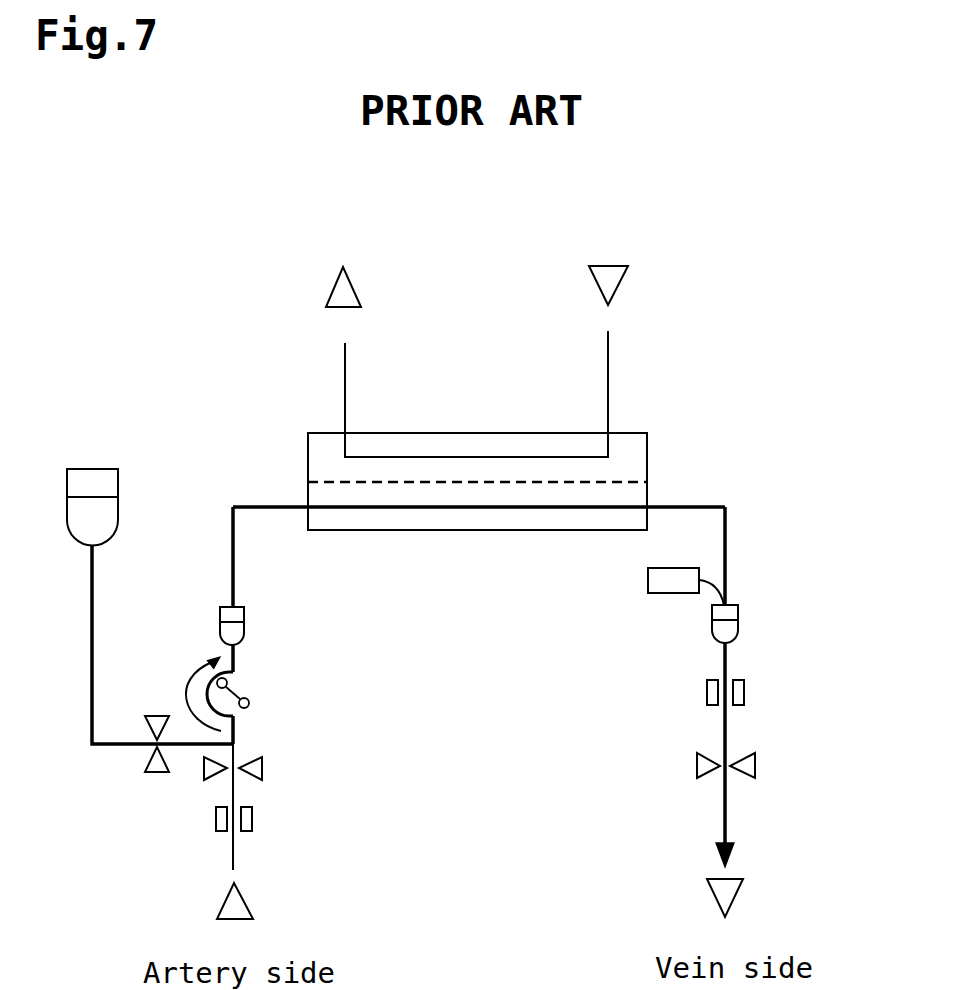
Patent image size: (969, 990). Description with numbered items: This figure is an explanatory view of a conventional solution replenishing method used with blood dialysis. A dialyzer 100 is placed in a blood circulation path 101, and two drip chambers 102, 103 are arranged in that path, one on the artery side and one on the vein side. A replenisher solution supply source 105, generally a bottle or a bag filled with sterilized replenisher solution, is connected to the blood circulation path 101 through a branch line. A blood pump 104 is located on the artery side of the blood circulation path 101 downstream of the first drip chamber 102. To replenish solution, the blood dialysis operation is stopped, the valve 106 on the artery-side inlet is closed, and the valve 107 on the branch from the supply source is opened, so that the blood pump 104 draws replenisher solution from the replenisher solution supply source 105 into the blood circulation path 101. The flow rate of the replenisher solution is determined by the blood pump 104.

The dialyzer 100 is at (549, 398).
The blood circulation path 101 is at (305, 557).
The drip chamber 102 is at (315, 613).
The drip chamber 103 is at (787, 618).
The blood pump 104 is at (283, 694).
The replenisher solution supply source 105 is at (153, 495).
The valve 106 is at (298, 763).
The valve 107 is at (136, 798).